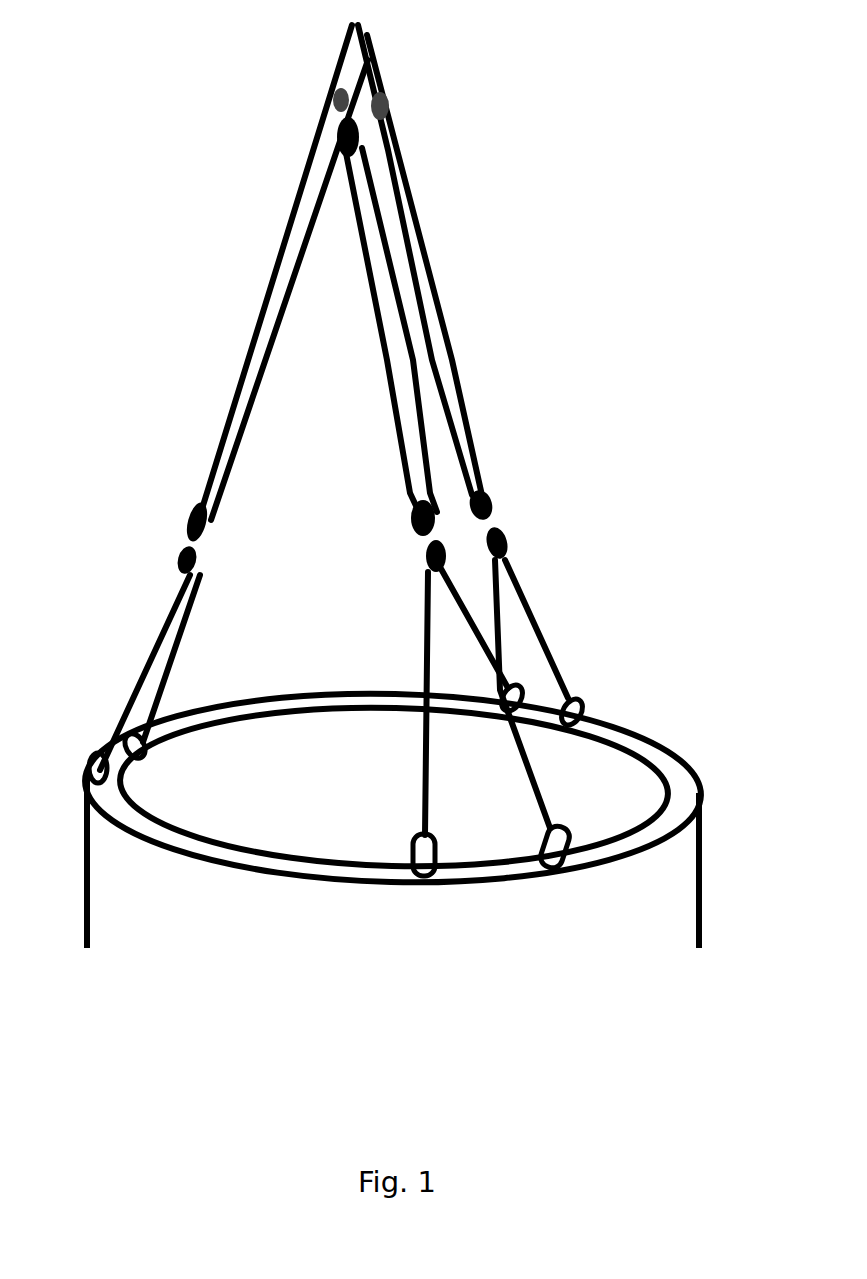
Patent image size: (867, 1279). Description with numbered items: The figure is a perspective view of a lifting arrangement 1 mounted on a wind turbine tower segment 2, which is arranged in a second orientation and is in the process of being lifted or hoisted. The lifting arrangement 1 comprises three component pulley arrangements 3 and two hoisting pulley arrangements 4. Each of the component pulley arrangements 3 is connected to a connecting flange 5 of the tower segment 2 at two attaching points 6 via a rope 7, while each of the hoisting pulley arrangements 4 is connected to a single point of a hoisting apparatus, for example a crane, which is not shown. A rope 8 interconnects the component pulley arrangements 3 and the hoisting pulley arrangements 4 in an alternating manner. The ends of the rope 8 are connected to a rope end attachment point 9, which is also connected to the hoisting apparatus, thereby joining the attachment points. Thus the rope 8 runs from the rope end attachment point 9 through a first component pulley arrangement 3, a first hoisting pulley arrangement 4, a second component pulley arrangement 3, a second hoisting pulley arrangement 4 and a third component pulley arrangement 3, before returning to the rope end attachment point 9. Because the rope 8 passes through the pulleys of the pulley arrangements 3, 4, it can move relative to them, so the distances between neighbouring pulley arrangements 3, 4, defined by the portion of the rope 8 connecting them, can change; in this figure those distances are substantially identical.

The lifting arrangement 1 is at (590, 230).
The wind turbine tower segment 2 is at (650, 910).
The component pulley arrangement 3 is at (183, 543).
The hoisting pulley arrangement 4 is at (335, 100).
The connecting flange 5 is at (675, 783).
The attaching point 6 is at (578, 718).
The rope 7 is at (540, 612).
The rope 8 is at (250, 328).
The rope end attachment point 9 is at (337, 135).